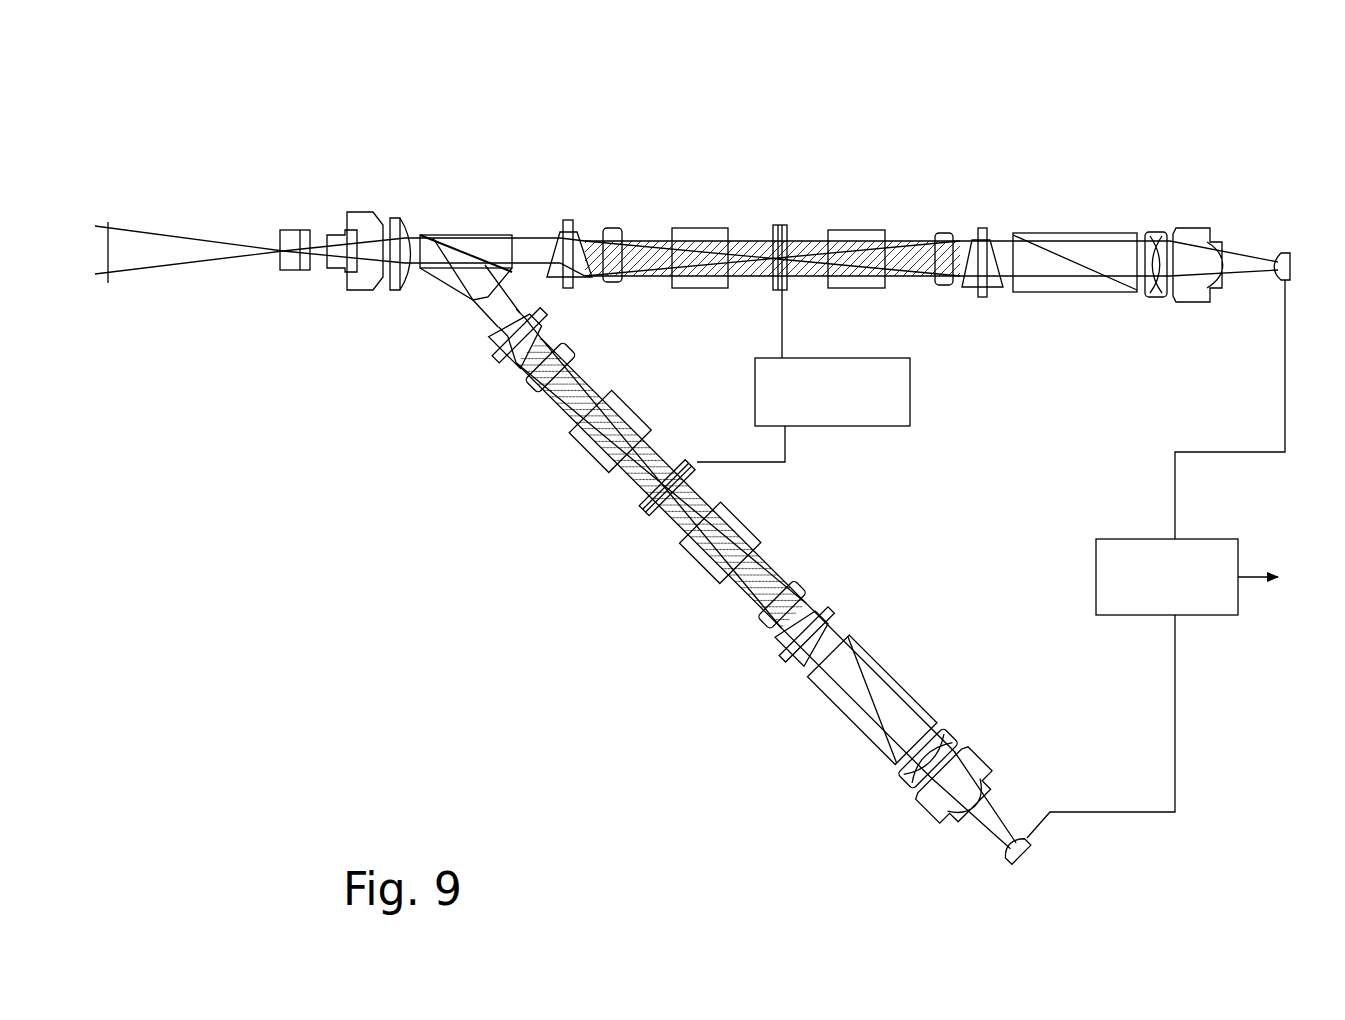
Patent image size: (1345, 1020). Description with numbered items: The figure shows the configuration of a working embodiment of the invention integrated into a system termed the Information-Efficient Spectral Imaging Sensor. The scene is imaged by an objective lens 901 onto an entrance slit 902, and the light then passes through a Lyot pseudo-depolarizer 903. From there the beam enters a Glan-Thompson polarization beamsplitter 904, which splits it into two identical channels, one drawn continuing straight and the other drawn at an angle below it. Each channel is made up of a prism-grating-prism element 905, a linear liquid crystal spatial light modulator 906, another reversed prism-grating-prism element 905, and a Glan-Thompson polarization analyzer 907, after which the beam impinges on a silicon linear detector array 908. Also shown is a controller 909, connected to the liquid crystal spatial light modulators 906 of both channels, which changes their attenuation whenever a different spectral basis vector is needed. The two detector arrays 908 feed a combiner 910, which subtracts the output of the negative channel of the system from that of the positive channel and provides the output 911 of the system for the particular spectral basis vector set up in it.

The objective lens 901 is at (107, 218).
The entrance slit 902 is at (275, 258).
The Lyot pseudo-depolarizer 903 is at (294, 220).
The Glan-Thompson polarization beamsplitter 904 is at (463, 224).
The prism-grating-prism element 905 is at (583, 216).
The linear liquid crystal spatial light modulator 906 is at (556, 528).
The Glan-Thompson polarization analyzer 907 is at (743, 750).
The silicon linear detector array 908 is at (873, 872).
The controller 909 is at (832, 392).
The combiner 910 is at (1167, 577).
The output 911 is at (1281, 576).